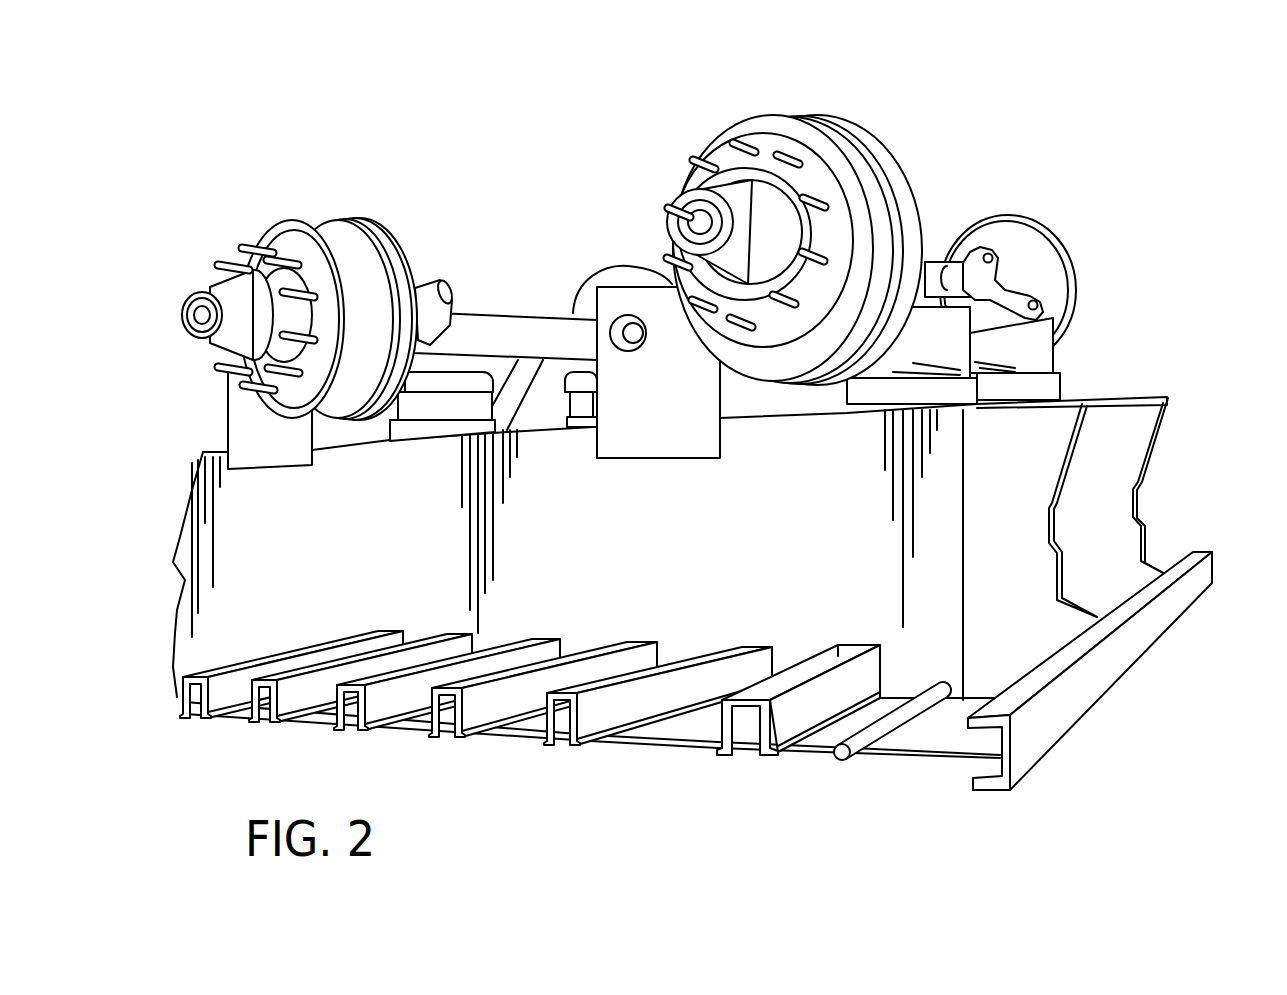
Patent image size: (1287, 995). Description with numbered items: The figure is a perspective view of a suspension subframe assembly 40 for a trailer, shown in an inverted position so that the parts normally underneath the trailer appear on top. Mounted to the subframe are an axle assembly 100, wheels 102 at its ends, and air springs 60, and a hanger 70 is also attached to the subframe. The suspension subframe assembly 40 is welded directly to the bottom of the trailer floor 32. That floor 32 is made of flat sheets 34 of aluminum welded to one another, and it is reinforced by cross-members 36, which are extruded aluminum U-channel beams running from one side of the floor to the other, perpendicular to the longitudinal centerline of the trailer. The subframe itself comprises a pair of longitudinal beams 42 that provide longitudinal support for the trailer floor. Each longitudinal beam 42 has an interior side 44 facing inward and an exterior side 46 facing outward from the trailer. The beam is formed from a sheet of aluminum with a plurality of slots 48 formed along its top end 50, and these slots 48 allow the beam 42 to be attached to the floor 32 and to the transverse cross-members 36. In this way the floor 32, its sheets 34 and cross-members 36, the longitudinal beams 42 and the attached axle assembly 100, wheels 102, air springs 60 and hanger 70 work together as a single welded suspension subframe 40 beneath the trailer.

The floor 32 is at (637, 743).
The flat sheets 34 is at (708, 717).
The cross-members 36 is at (798, 697).
The suspension subframe assembly 40 is at (569, 566).
The longitudinal beams 42 is at (1157, 467).
The interior side 44 is at (1127, 447).
The exterior side 46 is at (1040, 478).
The slots 48 is at (862, 645).
The top end 50 is at (892, 703).
The air springs 60 is at (455, 402).
The hanger 70 is at (665, 313).
The axle assembly 100 is at (963, 275).
The wheels 102 is at (773, 120).